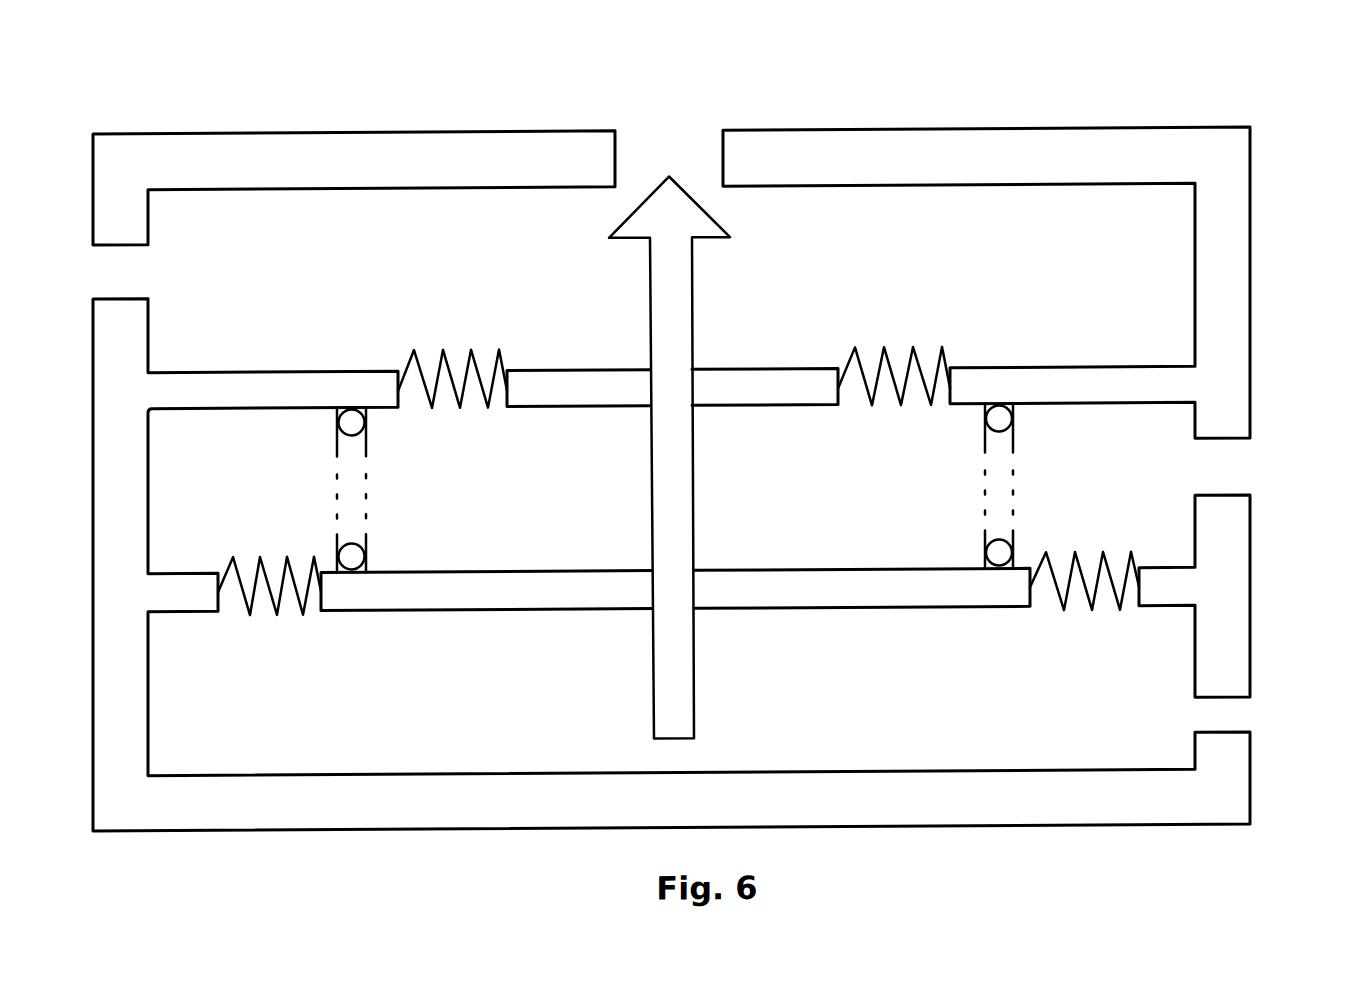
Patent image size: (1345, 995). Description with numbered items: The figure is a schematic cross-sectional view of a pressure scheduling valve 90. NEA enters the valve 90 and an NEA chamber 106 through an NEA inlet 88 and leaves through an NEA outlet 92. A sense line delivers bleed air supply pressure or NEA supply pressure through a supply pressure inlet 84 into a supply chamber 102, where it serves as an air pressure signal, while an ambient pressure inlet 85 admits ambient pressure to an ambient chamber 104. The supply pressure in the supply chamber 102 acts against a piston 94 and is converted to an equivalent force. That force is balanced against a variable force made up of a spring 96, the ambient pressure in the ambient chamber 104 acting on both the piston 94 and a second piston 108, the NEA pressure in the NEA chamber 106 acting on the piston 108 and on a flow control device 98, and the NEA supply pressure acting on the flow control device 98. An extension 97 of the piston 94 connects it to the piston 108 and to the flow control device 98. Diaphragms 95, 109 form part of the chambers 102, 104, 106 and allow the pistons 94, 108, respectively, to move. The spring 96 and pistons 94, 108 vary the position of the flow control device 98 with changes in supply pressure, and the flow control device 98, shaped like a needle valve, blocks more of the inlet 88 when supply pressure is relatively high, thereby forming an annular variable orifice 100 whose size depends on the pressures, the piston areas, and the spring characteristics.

The supply pressure inlet 84 is at (1244, 720).
The ambient pressure inlet 85 is at (1235, 470).
The NEA inlet 88 is at (660, 140).
The pressure scheduling valve 90 is at (1267, 175).
The NEA outlet 92 is at (140, 279).
The piston 94 is at (815, 587).
The diaphragm 95 is at (280, 603).
The spring 96 is at (1007, 533).
The extension 97 is at (678, 446).
The flow control device 98 is at (673, 216).
The variable orifice 100 is at (632, 193).
The supply chamber 102 is at (220, 711).
The ambient chamber 104 is at (427, 504).
The NEA chamber 106 is at (952, 292).
The piston 108 is at (805, 387).
The diaphragm 109 is at (415, 360).